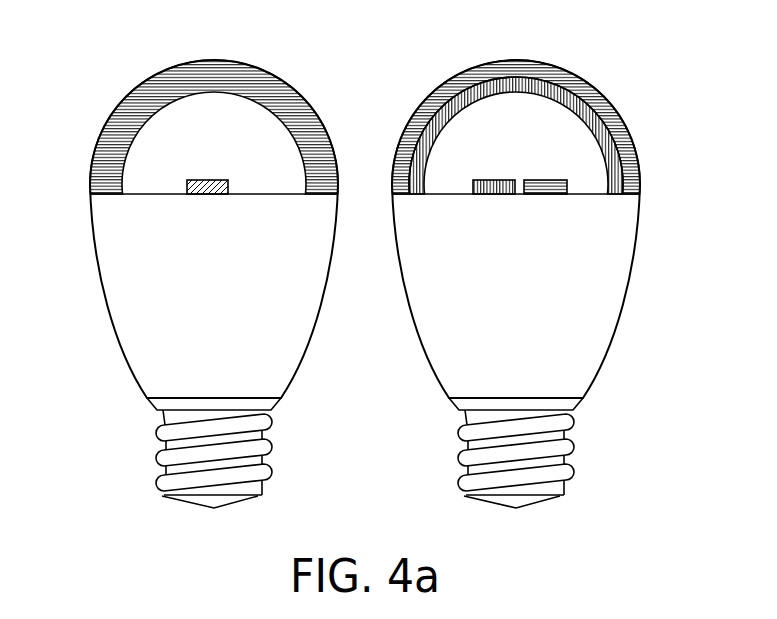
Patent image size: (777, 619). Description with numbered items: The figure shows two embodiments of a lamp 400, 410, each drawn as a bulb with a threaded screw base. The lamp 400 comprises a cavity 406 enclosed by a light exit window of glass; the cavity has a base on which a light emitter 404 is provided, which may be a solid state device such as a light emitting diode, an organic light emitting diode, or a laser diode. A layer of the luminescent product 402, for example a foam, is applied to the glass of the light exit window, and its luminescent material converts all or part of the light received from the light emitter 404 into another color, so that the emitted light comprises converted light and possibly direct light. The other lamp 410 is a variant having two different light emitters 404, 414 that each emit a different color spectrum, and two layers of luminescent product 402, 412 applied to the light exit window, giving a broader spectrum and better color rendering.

The lamp 400 is at (113, 82).
The luminescent product 402 is at (117, 133).
The light emitter 404 is at (200, 188).
The cavity 406 is at (251, 187).
The another lamp 410 is at (627, 80).
The luminescent product 412 is at (608, 163).
The light emitter 414 is at (553, 190).